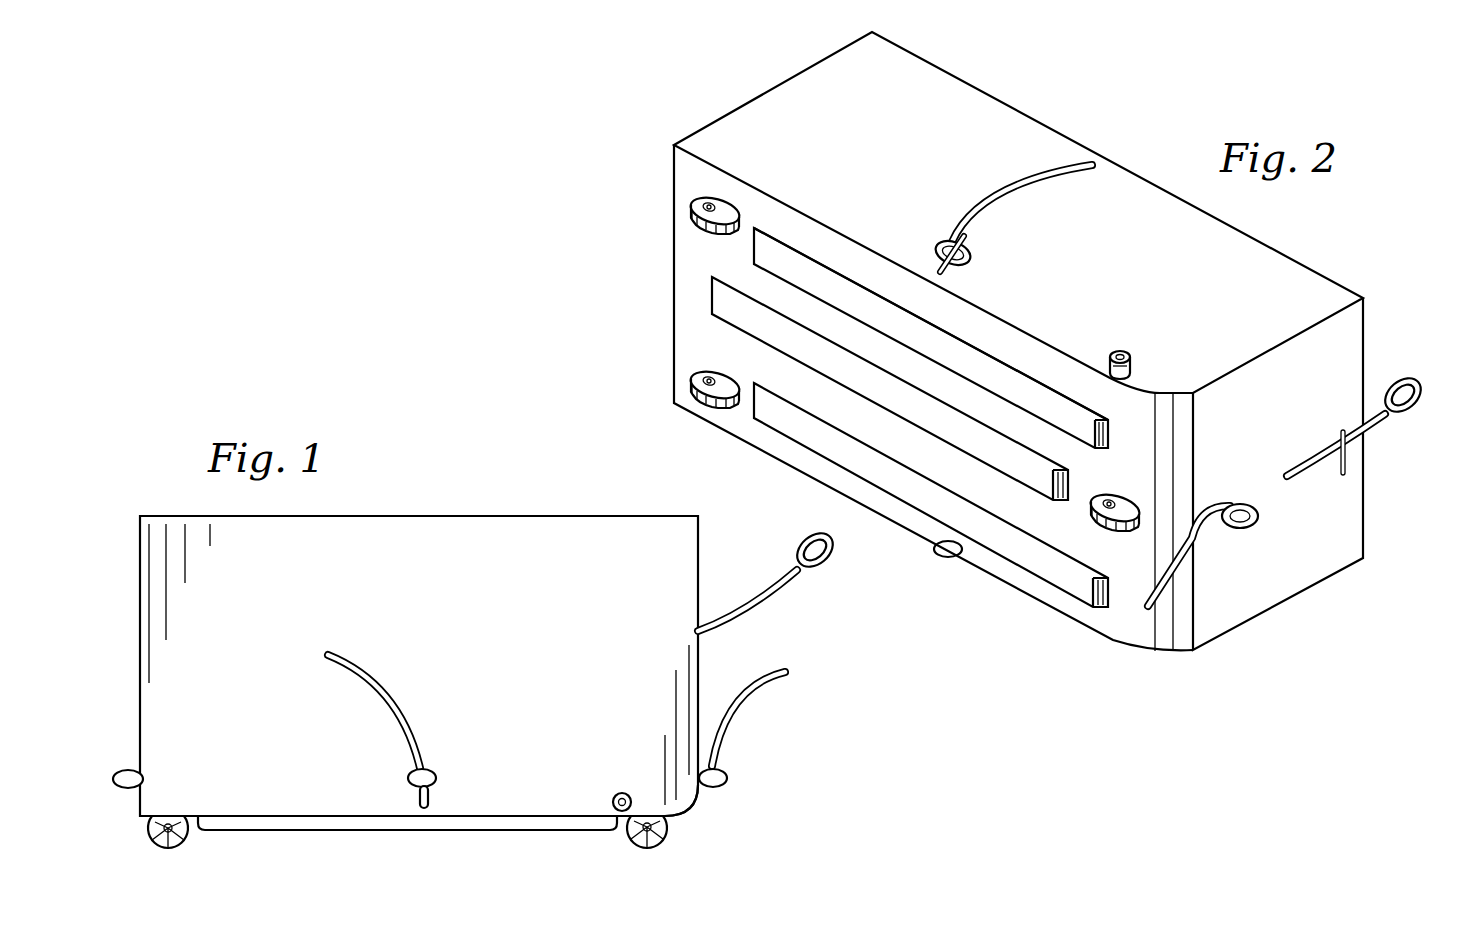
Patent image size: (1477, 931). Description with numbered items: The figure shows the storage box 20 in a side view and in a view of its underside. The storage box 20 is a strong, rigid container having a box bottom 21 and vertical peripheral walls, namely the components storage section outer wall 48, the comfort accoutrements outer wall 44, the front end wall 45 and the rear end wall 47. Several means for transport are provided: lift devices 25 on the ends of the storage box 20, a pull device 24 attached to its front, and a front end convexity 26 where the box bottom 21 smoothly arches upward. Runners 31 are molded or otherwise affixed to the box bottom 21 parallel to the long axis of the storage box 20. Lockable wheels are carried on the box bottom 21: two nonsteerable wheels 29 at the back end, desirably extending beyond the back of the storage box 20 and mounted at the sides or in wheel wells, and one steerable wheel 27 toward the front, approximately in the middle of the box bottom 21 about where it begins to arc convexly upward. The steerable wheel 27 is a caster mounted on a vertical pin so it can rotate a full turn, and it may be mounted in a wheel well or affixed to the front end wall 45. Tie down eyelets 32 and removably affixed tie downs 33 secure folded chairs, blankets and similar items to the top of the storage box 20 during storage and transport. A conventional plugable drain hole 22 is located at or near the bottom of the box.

In FIG. 1, the storage box 20 is at (258, 697).
In FIG. 2, the box bottom 21 is at (1077, 607).
In FIG. 1, the plugable drain hole 22 is at (622, 812).
In FIG. 2, the plugable drain hole 22 is at (1133, 363).
In FIG. 1, the pull device 24 is at (793, 583).
In FIG. 2, the pull device 24 is at (1378, 428).
In FIG. 2, the lift device 25 is at (1347, 460).
In FIG. 1, the front end convexity 26 is at (690, 806).
In FIG. 1, the steerable wheel 27 is at (660, 838).
In FIG. 2, the steerable wheel 27 is at (1110, 530).
In FIG. 1, the nonsteerable wheel 29 is at (185, 837).
In FIG. 2, the nonsteerable wheel 29 is at (692, 205).
In FIG. 1, the runner 31 is at (518, 830).
In FIG. 2, the runner 31 is at (1040, 407).
In FIG. 1, the tie down eyelet 32 is at (128, 768).
In FIG. 2, the tie down eyelet 32 is at (946, 240).
In FIG. 1, the tie down 33 is at (373, 675).
In FIG. 2, the tie down 33 is at (1040, 163).
In FIG. 2, the comfort accoutrements outer wall 44 is at (870, 192).
In FIG. 1, the front end wall 45 is at (698, 530).
In FIG. 2, the front end wall 45 is at (1208, 632).
In FIG. 1, the rear end wall 47 is at (140, 620).
In FIG. 2, the rear end wall 47 is at (674, 392).
In FIG. 2, the components storage section outer wall 48 is at (1013, 588).